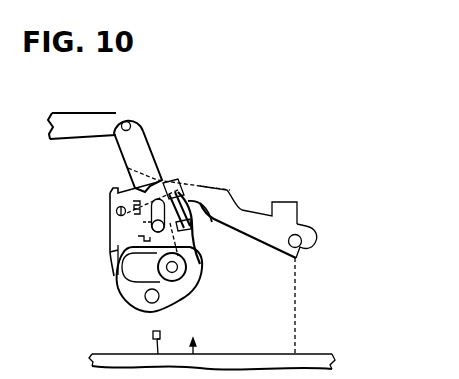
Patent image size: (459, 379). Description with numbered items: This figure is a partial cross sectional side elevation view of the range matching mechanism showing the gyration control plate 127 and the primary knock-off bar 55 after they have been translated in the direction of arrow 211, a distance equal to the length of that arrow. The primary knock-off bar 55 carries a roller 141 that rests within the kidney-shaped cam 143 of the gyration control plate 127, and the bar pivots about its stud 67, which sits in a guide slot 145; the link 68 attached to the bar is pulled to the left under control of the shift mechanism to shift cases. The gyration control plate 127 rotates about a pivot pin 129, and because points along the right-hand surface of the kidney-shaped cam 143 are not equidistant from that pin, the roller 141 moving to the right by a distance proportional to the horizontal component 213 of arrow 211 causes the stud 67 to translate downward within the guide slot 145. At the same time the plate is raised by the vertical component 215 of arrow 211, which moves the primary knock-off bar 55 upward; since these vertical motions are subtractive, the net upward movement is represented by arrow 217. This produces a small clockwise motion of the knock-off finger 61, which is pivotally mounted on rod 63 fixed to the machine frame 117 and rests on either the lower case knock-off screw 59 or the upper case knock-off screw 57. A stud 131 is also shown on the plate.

The link 68 is at (88, 117).
The upper case knock-off screw 57 is at (176, 186).
The guide slot 145 is at (190, 186).
The knock-off finger 61 is at (251, 212).
The rod 63 is at (301, 236).
The lower case knock-off screw 59 is at (122, 199).
The pivot pin 129 is at (116, 210).
The stud 67 is at (118, 238).
The gyration control plate 127 is at (110, 251).
The kidney-shaped cam 143 is at (116, 286).
The roller 141 is at (187, 270).
The stud 131 is at (160, 297).
The primary knock-off bar 55 is at (212, 222).
The horizontal component 213 is at (155, 332).
The arrow 211 is at (153, 340).
The vertical component 215 is at (160, 338).
The arrow 217 is at (194, 349).
The machine frame 117 is at (258, 353).